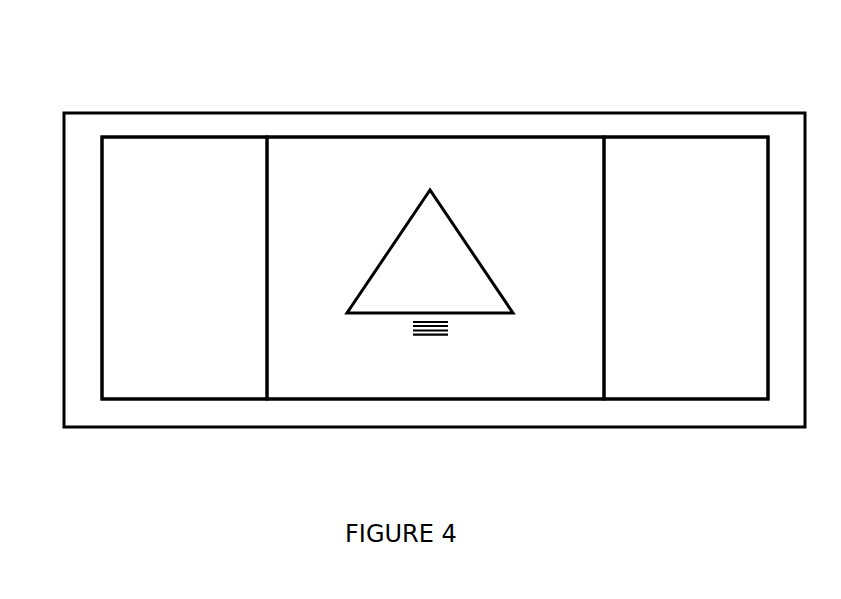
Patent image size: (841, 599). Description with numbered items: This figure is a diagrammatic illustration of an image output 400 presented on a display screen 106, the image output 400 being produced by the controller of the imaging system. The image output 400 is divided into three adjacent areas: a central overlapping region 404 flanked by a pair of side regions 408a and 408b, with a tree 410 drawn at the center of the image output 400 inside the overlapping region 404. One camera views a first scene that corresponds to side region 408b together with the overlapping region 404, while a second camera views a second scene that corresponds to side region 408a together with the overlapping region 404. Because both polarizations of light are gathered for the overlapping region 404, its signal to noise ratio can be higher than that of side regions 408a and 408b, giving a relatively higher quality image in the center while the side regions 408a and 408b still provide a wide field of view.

The image output 400 is at (582, 413).
The display screen 106 is at (627, 112).
The side region 408a is at (168, 137).
The overlapping region 404 is at (404, 137).
The side region 408b is at (680, 137).
The tree 410 is at (452, 218).